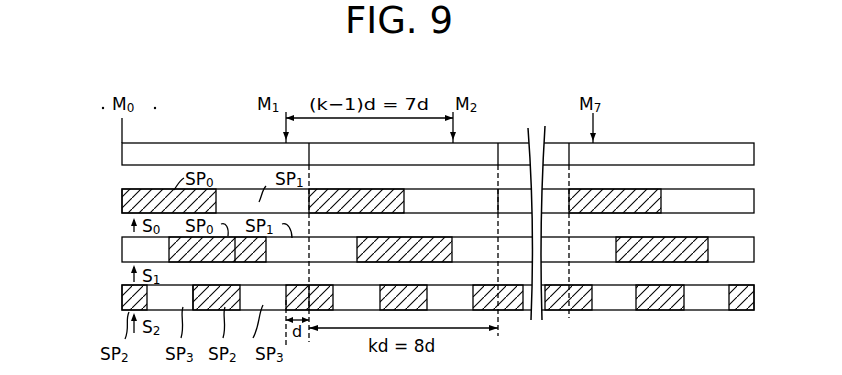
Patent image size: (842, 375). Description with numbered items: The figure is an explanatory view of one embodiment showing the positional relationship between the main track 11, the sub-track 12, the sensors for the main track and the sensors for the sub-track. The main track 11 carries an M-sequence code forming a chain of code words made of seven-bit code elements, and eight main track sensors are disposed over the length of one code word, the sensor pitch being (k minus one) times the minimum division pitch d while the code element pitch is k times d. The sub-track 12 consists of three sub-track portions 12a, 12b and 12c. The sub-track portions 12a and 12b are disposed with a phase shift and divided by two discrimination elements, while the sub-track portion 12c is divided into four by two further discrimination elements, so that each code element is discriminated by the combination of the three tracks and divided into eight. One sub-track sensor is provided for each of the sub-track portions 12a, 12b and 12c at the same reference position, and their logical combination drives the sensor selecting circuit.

The main track 11 is at (122, 152).
The sub-track 12 is at (97, 190).
The sub-track portion 12a is at (122, 200).
The sub-track portion 12b is at (122, 262).
The sub-track portion 12c is at (122, 300).